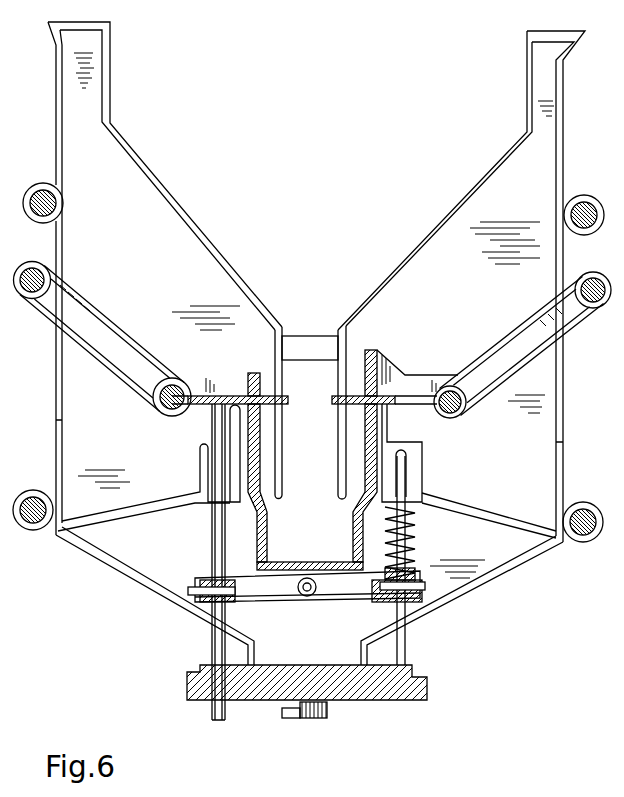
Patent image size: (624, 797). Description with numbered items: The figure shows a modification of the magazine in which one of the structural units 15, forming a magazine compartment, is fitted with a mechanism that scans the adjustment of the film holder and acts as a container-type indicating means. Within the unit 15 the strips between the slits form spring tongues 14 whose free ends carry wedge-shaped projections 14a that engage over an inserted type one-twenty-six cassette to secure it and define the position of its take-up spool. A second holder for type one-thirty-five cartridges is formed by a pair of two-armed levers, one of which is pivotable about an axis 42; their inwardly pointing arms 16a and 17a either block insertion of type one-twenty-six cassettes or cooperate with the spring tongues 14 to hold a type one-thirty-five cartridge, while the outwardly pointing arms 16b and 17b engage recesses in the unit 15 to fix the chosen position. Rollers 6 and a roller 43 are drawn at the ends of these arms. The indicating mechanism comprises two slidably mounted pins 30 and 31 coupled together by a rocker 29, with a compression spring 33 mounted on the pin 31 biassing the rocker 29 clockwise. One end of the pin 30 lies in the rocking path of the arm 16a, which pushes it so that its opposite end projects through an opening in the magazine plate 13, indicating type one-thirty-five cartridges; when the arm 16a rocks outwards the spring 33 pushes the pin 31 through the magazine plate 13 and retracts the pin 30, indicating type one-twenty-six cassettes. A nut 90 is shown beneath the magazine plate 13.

The guide roller 6 is at (44, 196).
The structural unit 15 is at (500, 202).
The inwardly pointing arm 16a is at (246, 385).
The outwardly pointing arm 16b is at (76, 299).
The roller 43 is at (170, 414).
The inwardly pointing arm 17a is at (397, 389).
The outwardly pointing arm 17b is at (556, 321).
The axis 42 is at (457, 417).
The spring tongue 14 is at (333, 376).
The wedge-shaped projection 14a is at (314, 349).
The pin 30 is at (213, 552).
The pin 31 is at (405, 647).
The compression spring 33 is at (409, 531).
The rocker 29 is at (340, 600).
The magazine plate 13 is at (420, 690).
The nut 90 is at (327, 716).